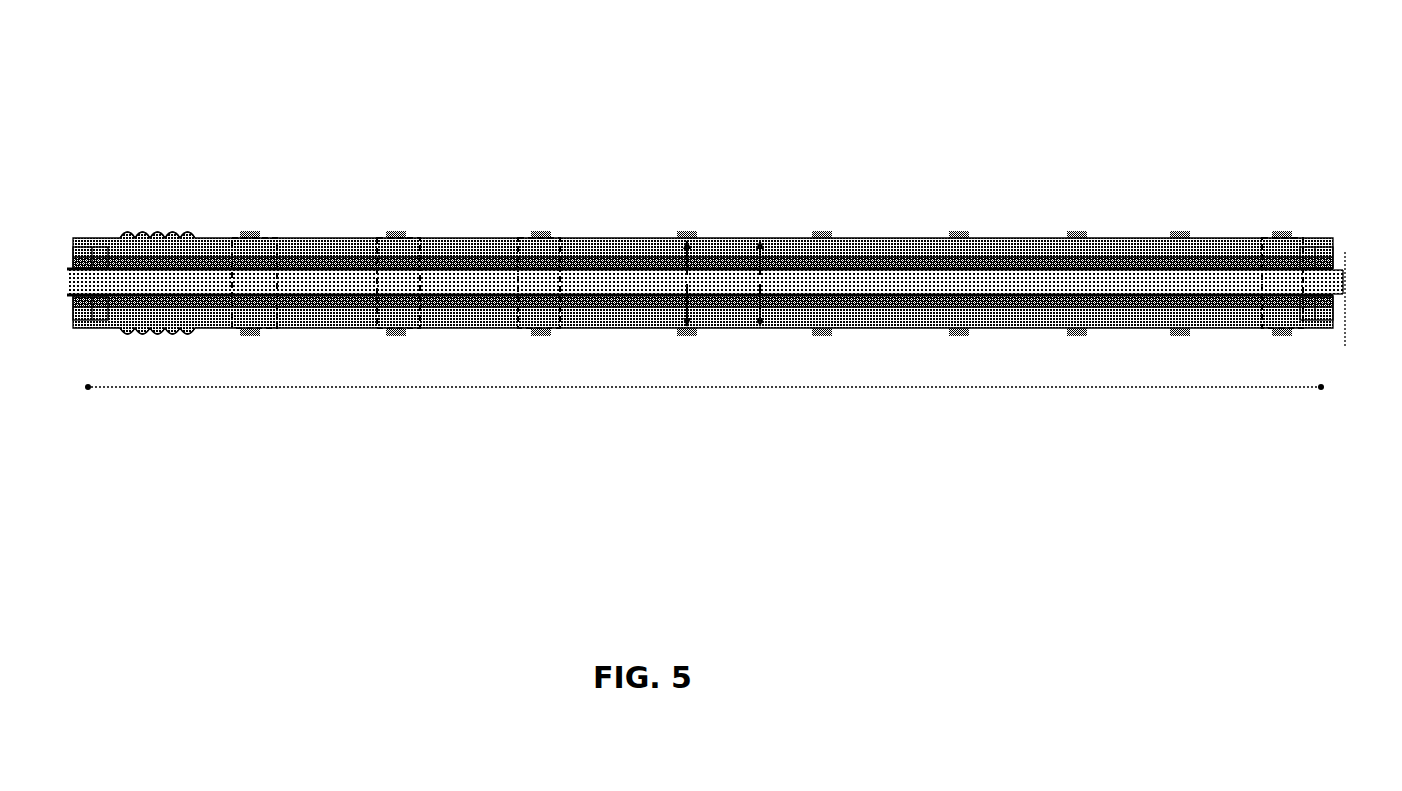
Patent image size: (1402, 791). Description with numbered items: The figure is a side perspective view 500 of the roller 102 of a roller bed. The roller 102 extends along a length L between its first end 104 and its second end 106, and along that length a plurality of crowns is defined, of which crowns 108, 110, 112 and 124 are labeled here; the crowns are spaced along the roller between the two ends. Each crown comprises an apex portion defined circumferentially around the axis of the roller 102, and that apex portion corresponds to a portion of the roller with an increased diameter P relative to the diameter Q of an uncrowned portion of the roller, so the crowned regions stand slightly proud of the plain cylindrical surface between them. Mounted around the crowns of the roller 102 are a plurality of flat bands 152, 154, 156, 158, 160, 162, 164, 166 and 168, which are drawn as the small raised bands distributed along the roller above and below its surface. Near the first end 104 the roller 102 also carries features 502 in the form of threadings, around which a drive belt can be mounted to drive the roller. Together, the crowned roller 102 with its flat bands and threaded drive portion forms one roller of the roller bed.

The side perspective view 500 is at (165, 80).
The roller 102 is at (145, 198).
The first end 104 is at (73, 282).
The second end 106 is at (1333, 248).
The crown 108 is at (271, 283).
The crown 110 is at (416, 283).
The crown 112 is at (523, 283).
The crown 124 is at (1267, 283).
The flat band 152 is at (1282, 330).
The flat band 154 is at (1180, 330).
The flat band 156 is at (1077, 330).
The flat band 158 is at (959, 330).
The flat band 160 is at (822, 330).
The flat band 162 is at (687, 330).
The flat band 164 is at (541, 330).
The flat band 166 is at (396, 330).
The flat band 168 is at (250, 330).
The features in form of threadings 502 is at (163, 332).